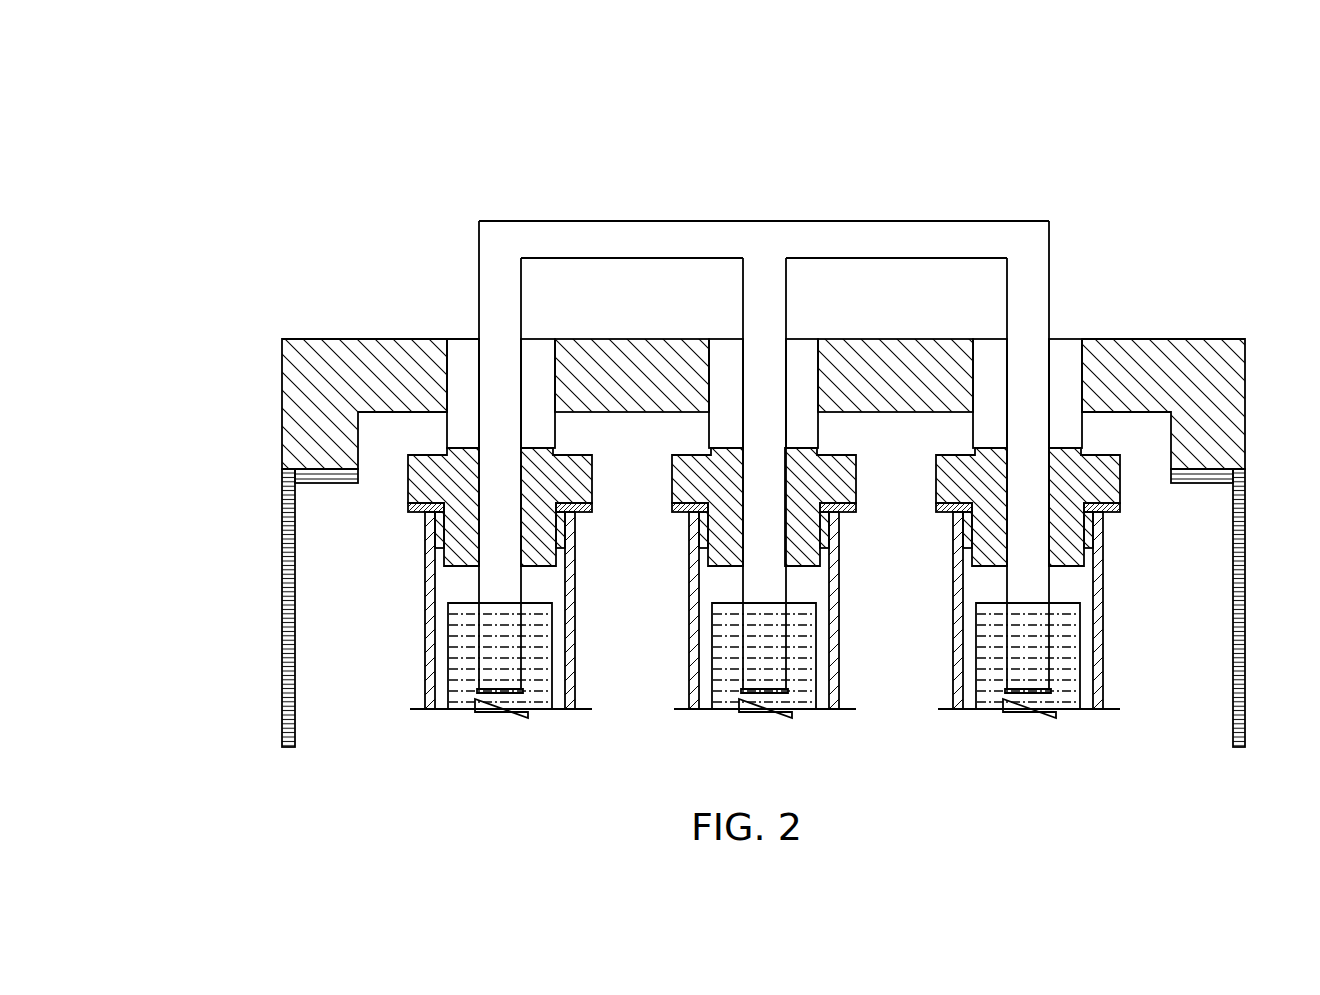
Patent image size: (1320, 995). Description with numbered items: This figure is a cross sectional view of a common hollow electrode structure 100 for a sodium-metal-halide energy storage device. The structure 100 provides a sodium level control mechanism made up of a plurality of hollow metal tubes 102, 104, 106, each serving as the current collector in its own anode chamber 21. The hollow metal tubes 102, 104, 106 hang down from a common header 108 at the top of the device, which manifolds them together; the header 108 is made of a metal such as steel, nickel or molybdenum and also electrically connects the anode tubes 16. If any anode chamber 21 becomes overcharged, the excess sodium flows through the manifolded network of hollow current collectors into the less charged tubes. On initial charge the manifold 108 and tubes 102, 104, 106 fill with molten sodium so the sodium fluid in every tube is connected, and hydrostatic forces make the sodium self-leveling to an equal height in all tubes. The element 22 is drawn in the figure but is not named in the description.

The common hollow electrode structure 100 is at (252, 152).
The common header 108 is at (933, 222).
The hollow metal tube 102 is at (525, 306).
The hollow metal tube 104 is at (788, 306).
The hollow metal tube 106 is at (1050, 310).
The housing wall 22 is at (276, 567).
The anode chamber 21 is at (1073, 581).
The anode tube 16 is at (425, 596).